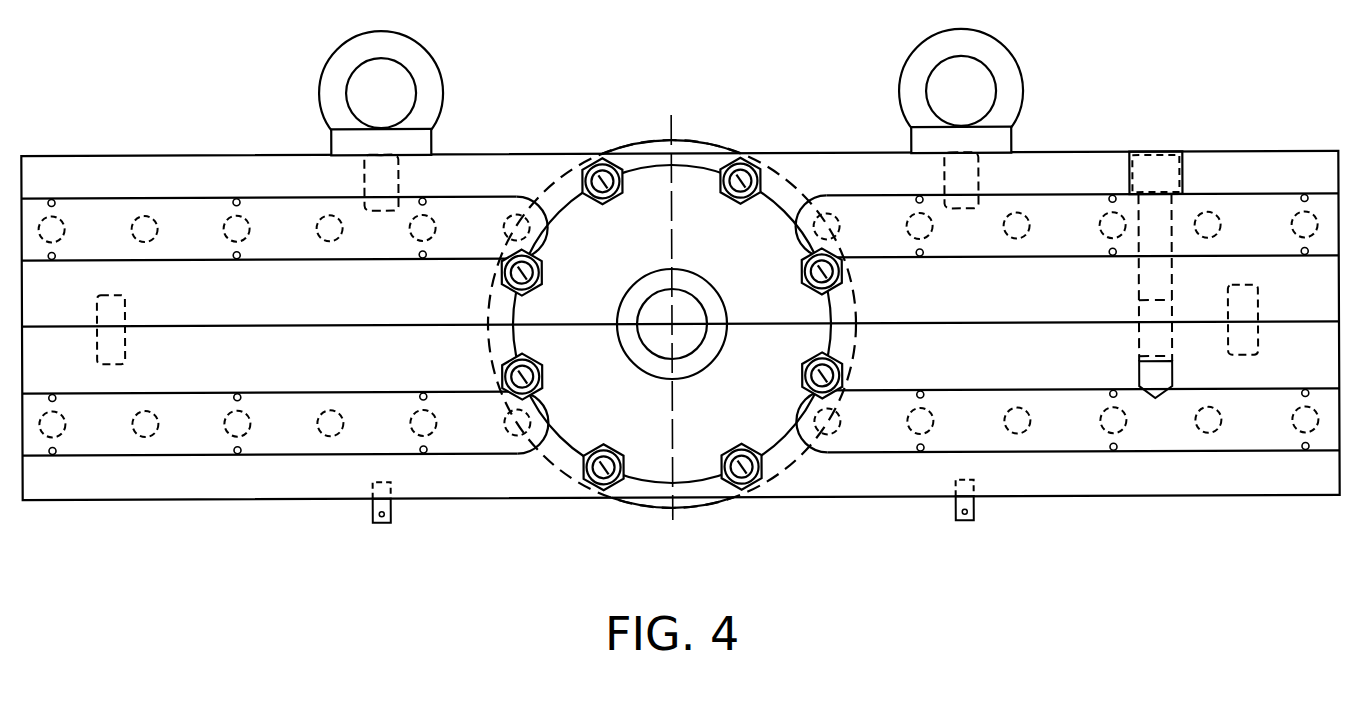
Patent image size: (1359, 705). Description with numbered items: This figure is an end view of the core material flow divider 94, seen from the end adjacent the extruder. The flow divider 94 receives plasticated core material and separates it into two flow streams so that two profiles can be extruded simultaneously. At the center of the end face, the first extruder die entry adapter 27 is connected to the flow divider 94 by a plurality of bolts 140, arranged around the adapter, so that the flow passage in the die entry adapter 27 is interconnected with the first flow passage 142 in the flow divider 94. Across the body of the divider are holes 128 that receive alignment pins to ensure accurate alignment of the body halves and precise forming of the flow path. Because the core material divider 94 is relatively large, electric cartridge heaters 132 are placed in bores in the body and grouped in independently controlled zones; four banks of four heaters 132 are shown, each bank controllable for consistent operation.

The die entry adapter 27 is at (614, 263).
The flow divider 94 is at (240, 505).
The holes 128 is at (128, 298).
The electric cartridge heaters 132 is at (150, 214).
The bolts 140 is at (732, 165).
The first flow passage 142 is at (665, 345).